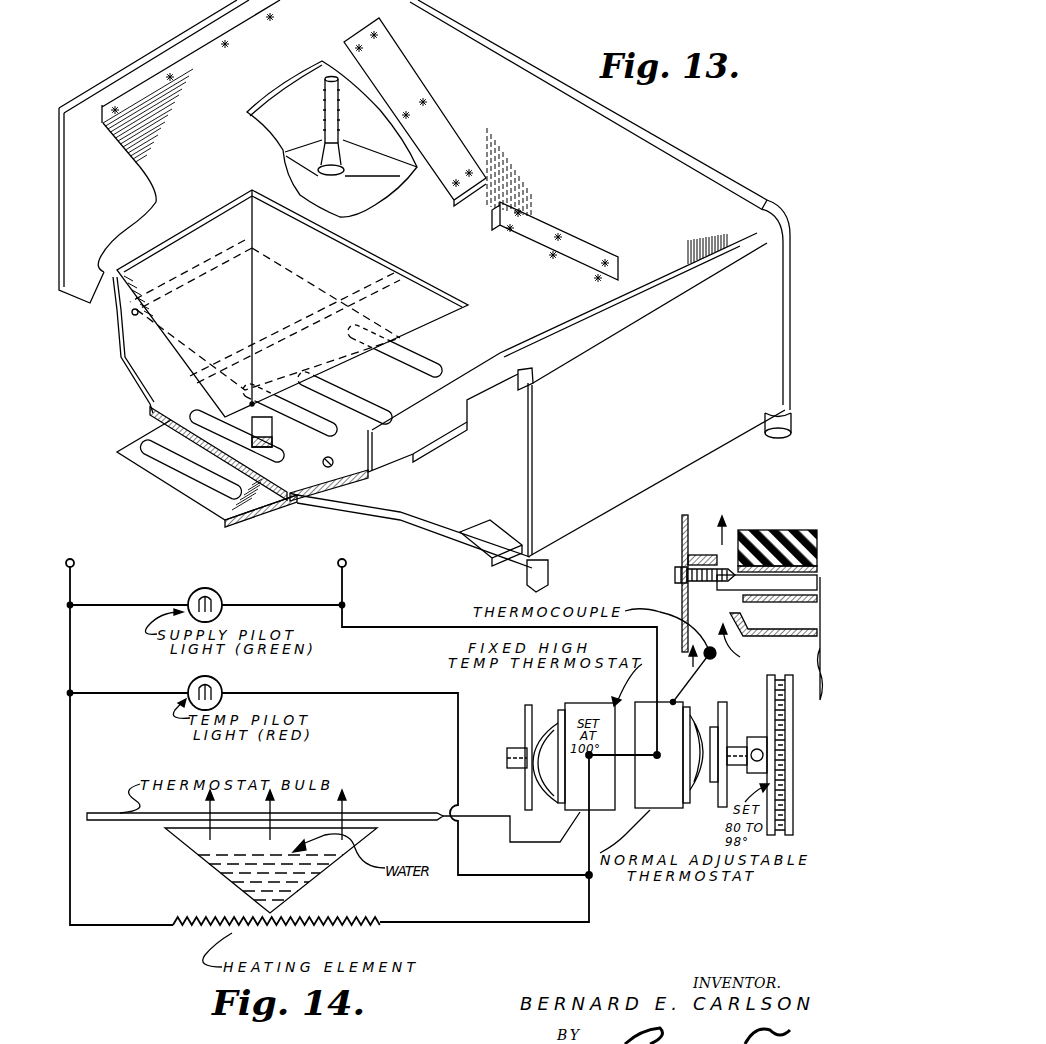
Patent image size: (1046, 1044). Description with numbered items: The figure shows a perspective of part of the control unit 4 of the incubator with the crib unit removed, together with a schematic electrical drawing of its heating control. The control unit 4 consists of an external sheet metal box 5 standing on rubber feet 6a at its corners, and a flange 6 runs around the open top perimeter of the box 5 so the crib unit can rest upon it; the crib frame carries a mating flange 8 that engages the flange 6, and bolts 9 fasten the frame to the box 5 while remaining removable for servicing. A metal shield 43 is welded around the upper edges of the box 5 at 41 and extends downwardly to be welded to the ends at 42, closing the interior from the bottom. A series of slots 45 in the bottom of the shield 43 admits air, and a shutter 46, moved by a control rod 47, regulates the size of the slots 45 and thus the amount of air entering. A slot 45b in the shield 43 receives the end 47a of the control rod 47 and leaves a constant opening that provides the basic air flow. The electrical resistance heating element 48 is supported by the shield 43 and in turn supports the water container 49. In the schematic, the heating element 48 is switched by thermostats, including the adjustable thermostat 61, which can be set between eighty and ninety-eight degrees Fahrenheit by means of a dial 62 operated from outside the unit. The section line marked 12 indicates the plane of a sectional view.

In FIG. 13, the control unit 4 is at (541, 489).
In FIG. 13, the sheet metal box 5 is at (647, 400).
In FIG. 13, the flange 6 is at (581, 215).
In FIG. 13, the rubber feet 6a is at (526, 261).
In FIG. 14, the flange 8 is at (752, 607).
In FIG. 14, the bolts 9 is at (685, 571).
In FIG. 13, the section line 12- 12 is at (215, 483).
In FIG. 13, the upper edges weld location 41 is at (169, 206).
In FIG. 13, the ends weld location 42 is at (481, 150).
In FIG. 13, the metal shield 43 is at (443, 423).
In FIG. 13, the slots 45 is at (296, 426).
In FIG. 13, the slot 45b is at (277, 394).
In FIG. 13, the shutter 46 is at (207, 480).
In FIG. 13, the control rod 47 is at (504, 556).
In FIG. 13, the end of control rod 47a is at (232, 390).
In FIG. 14, the heating element 48 is at (260, 940).
In FIG. 13, the water container 49 is at (315, 303).
In FIG. 14, the water container 49 is at (262, 870).
In FIG. 14, the adjustable thermostat 61 is at (701, 767).
In FIG. 14, the dial 62 is at (758, 750).